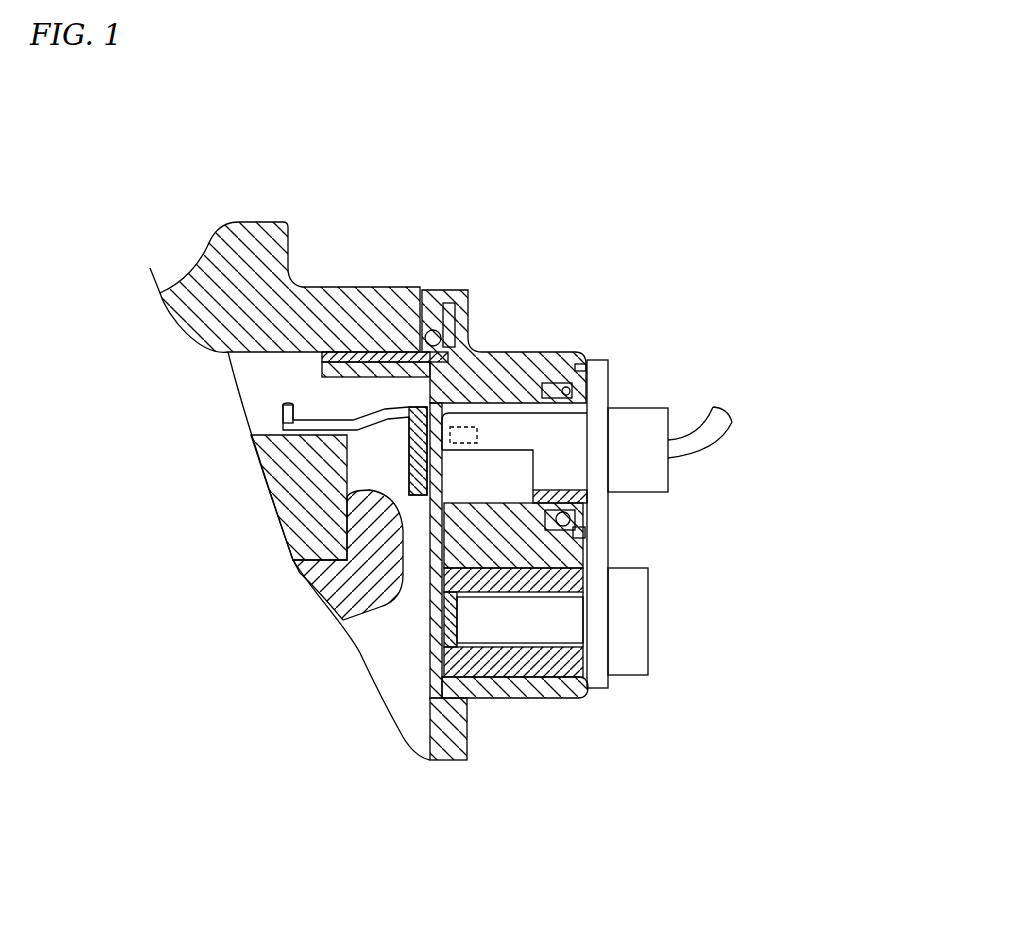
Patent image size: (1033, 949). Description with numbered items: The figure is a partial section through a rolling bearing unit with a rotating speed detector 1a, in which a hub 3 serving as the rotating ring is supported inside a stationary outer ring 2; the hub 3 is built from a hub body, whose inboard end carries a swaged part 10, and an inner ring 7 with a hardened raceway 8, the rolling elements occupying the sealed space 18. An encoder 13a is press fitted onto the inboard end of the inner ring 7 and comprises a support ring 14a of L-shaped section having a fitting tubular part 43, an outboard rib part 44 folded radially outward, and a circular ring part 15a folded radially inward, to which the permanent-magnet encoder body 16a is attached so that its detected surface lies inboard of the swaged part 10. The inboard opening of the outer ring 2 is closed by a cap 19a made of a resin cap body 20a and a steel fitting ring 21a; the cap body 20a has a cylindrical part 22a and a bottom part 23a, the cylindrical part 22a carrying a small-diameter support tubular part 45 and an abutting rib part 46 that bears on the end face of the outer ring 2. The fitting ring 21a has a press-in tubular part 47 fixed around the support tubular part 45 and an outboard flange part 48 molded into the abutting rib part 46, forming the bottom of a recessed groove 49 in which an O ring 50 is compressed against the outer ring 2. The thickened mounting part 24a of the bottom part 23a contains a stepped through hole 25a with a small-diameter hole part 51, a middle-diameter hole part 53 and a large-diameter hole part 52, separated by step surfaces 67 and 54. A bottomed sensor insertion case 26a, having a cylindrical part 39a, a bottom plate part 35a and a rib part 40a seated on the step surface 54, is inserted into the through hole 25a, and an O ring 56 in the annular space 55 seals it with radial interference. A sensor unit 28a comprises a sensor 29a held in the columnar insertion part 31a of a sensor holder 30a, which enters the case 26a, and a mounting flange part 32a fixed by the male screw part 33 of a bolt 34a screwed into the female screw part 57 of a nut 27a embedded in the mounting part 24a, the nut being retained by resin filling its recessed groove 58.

The rolling bearing unit with rotating speed detector 1a is at (185, 238).
The outer ring 2 is at (230, 237).
The hub 3 is at (282, 556).
The inner ring 7 is at (283, 520).
The raceway 8 is at (330, 585).
The swaged part 10 is at (320, 582).
The encoder 13a is at (353, 418).
The support ring 14a is at (347, 425).
The circular ring part 15a is at (407, 450).
The encoder body 16a is at (320, 492).
The space 18 is at (388, 645).
The cap 19a is at (552, 524).
The cap body 20a is at (560, 700).
The fitting ring 21a is at (366, 350).
The cylindrical part 22a is at (392, 355).
The bottom part 23a is at (445, 757).
The mounting part 24a is at (478, 700).
The through hole 25a is at (545, 400).
The sensor insertion case 26a is at (535, 385).
The nut 27a is at (542, 700).
The sensor unit 28a is at (635, 420).
The sensor 29a is at (477, 435).
The sensor holder 30a is at (628, 670).
The insertion part 31a is at (590, 422).
The mounting flange part 32a is at (632, 680).
The male screw part 33 is at (430, 687).
The bolt 34a is at (633, 636).
The bottom plate part 35a is at (483, 372).
The cylindrical part 39a is at (566, 495).
The rib part 40a is at (588, 385).
The fitting tubular part 43 is at (300, 432).
The outboard rib part 44 is at (283, 410).
The support tubular part 45 is at (318, 335).
The abutting rib part 46 is at (449, 300).
The press-in tubular part 47 is at (323, 340).
The outboard flange part 48 is at (458, 298).
The recessed groove 49 is at (431, 328).
The O ring 50 is at (452, 322).
The small-diameter hole part 51 is at (510, 360).
The large-diameter hole part 52 is at (582, 388).
The middle-diameter hole part 53 is at (558, 372).
The step surface 54 is at (585, 525).
The annular space 55 is at (585, 510).
The O ring 56 is at (573, 520).
The female screw part 57 is at (443, 750).
The recessed groove 58 is at (510, 700).
The step surface 67 is at (612, 580).